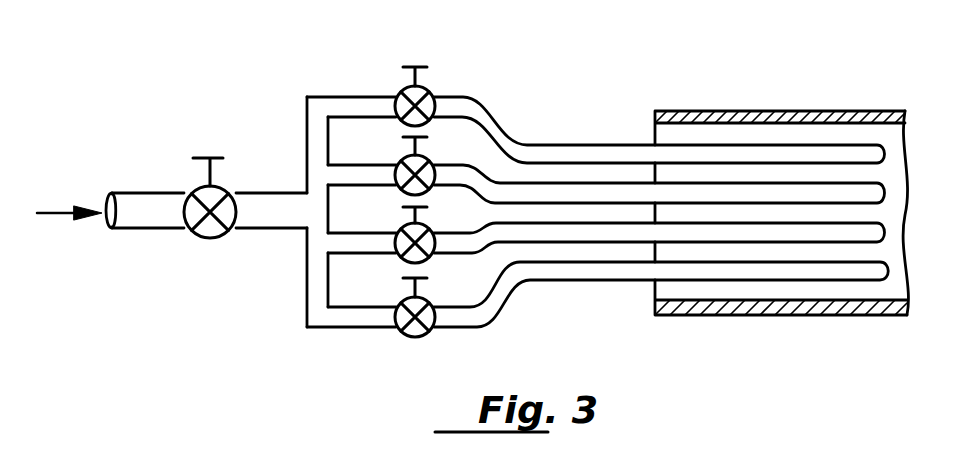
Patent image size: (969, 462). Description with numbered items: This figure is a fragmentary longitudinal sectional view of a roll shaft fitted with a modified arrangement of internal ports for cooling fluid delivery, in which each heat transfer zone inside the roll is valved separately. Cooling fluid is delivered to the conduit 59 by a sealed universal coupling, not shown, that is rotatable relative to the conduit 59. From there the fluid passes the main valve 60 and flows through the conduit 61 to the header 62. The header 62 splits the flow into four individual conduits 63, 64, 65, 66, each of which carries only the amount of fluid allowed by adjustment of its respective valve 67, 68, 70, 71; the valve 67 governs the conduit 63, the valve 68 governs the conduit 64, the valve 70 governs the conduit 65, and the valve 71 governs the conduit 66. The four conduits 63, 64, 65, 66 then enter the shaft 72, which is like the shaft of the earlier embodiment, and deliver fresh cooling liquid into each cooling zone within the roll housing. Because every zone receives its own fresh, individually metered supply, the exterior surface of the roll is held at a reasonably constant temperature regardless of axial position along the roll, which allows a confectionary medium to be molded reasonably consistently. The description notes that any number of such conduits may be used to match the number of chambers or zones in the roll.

The conduit 59 is at (143, 200).
The main valve 60 is at (215, 195).
The conduits 61 is at (268, 218).
The header 62 is at (313, 296).
The individual conduit 63 is at (488, 117).
The individual conduit 64 is at (443, 175).
The individual conduit 65 is at (480, 233).
The individual conduit 66 is at (490, 300).
The valve 67 is at (421, 90).
The valve 68 is at (405, 162).
The valve 70 is at (408, 230).
The valve 71 is at (405, 318).
The shaft 72 is at (737, 111).